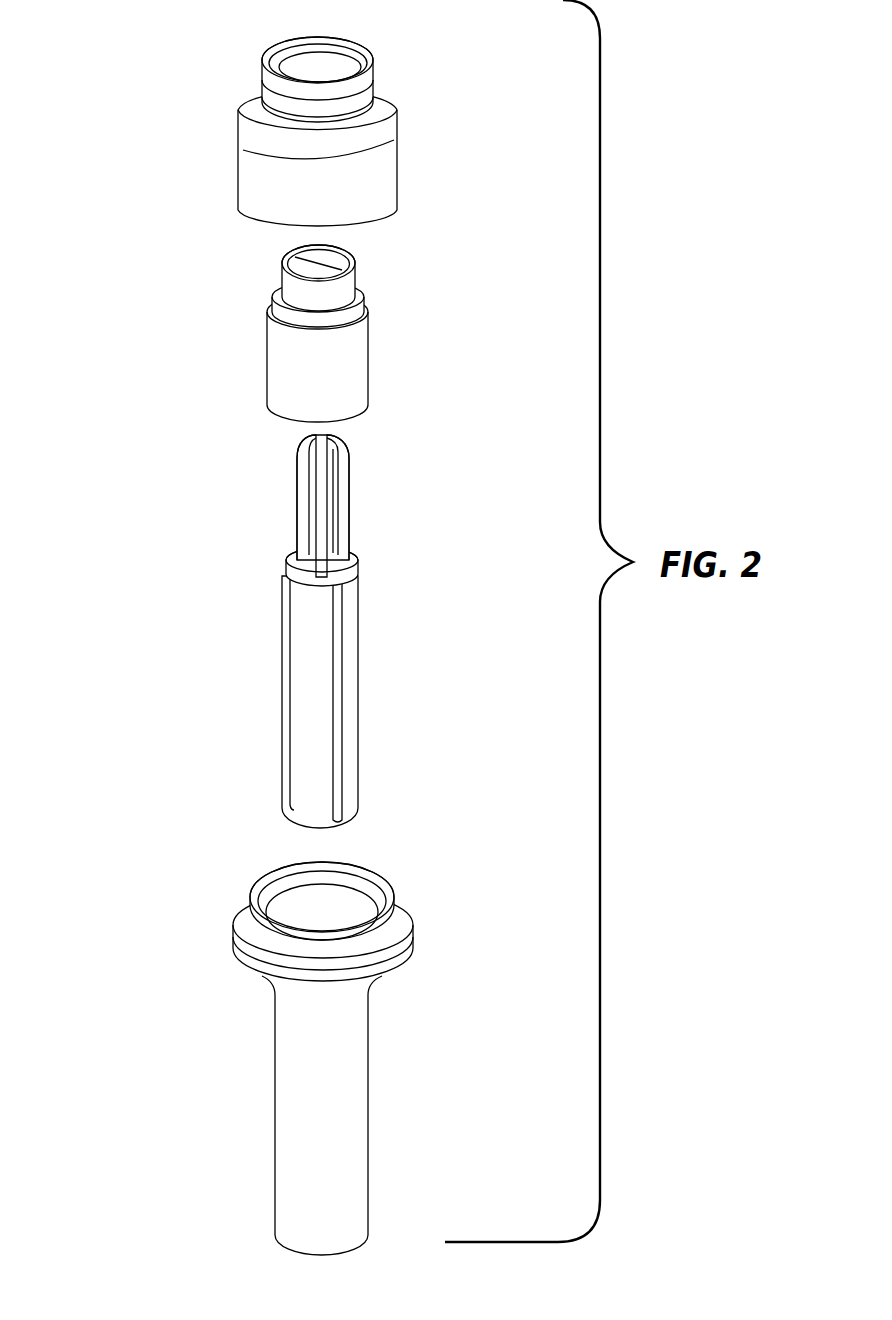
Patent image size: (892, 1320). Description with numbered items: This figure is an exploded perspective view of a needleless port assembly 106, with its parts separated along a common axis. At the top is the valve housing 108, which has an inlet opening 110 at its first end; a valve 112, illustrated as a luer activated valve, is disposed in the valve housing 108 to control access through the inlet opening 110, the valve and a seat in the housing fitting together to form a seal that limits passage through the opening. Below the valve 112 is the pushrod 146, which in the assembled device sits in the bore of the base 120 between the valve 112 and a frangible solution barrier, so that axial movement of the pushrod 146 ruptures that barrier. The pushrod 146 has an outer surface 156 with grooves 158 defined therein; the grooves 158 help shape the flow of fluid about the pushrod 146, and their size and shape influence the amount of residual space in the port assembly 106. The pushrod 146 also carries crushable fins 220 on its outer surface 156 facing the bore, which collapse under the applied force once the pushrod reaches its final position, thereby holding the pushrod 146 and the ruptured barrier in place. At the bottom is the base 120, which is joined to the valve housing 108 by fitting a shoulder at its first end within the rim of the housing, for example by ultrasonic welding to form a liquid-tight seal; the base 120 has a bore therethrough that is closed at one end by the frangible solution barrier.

The port assembly 106 is at (182, 403).
The valve housing 108 is at (380, 185).
The inlet opening 110 is at (340, 66).
The valve 112 is at (352, 378).
The pushrod 146 is at (333, 631).
The outer surface 156 is at (360, 582).
The grooves 158 is at (307, 503).
The crushable fins 220 is at (341, 687).
The base 120 is at (352, 1068).